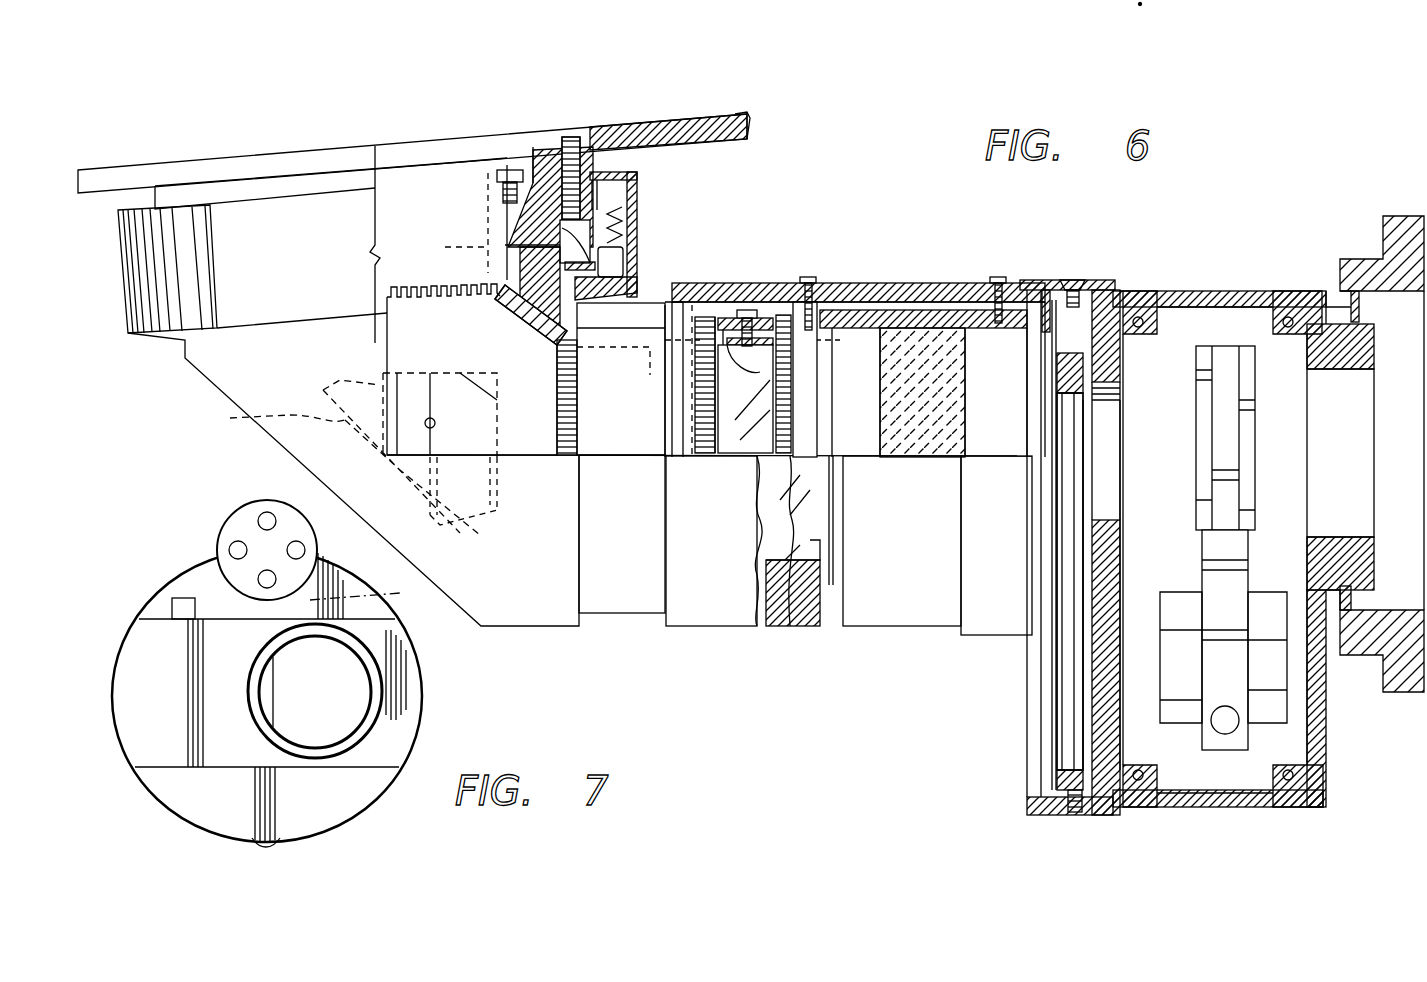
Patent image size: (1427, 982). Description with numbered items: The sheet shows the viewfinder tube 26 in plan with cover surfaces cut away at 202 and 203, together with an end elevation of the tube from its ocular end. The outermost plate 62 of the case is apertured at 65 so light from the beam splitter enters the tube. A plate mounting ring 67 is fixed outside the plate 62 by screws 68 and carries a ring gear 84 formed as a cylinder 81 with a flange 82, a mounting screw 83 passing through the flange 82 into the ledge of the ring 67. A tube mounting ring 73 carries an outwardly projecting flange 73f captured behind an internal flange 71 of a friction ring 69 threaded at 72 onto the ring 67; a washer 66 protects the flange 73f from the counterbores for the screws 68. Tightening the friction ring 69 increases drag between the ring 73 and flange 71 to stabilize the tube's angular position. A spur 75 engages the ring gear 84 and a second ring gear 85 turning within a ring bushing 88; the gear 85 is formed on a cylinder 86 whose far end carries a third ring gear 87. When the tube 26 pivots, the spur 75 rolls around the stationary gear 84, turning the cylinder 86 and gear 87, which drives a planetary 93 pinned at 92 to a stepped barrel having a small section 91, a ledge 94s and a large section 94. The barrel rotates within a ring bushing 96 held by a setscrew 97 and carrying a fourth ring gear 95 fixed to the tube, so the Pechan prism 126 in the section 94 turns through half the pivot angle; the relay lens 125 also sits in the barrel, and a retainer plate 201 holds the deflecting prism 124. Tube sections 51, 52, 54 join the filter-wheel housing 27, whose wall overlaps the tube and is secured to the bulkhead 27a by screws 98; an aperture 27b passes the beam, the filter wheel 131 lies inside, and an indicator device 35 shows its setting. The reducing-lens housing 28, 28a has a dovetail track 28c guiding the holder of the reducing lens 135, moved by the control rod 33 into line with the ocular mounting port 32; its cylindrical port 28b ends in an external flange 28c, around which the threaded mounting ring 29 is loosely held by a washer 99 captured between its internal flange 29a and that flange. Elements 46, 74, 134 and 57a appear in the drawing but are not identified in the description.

In FIG. 6, the viewfinder tube 26 is at (900, 283).
In FIG. 6, the filter-wheel housing 27 is at (1040, 815).
In FIG. 7, the filter-wheel housing 27 is at (198, 567).
In FIG. 6, the bulkhead 27a is at (1125, 300).
In FIG. 6, the aperture 27b is at (1107, 547).
In FIG. 6, the reducing-lens housing 28 is at (1233, 552).
In FIG. 7, the reducing-lens housing 28 is at (147, 737).
In FIG. 6, the reducing-lens housing body 28a is at (1297, 807).
In FIG. 6, the cylindrical port 28b is at (1310, 547).
In FIG. 6, the external flange 28c is at (1212, 387).
In FIG. 6, the mounting ring 29 is at (1402, 692).
In FIG. 7, the mounting ring 29 is at (375, 705).
In FIG. 6, the internal flange 29a is at (1337, 612).
In FIG. 7, the ocular mounting port 32 is at (383, 670).
In FIG. 6, the control rod 33 is at (1225, 737).
In FIG. 7, the control rod 33 is at (180, 598).
In FIG. 7, the indicator device 35 is at (257, 507).
In FIG. 6, the body 46 is at (118, 300).
In FIG. 6, the tube section 51 is at (535, 610).
In FIG. 6, the tube section 52 is at (715, 626).
In FIG. 6, the tube section 54 is at (997, 637).
In FIG. 6, the screw 57a is at (1142, 318).
In FIG. 6, the outermost plate 62 is at (78, 193).
In FIG. 6, the aperture 65 is at (560, 150).
In FIG. 6, the washer 66 is at (560, 228).
In FIG. 6, the plate mounting ring 67 is at (545, 160).
In FIG. 6, the screws 68 is at (605, 150).
In FIG. 6, the friction ring 69 is at (637, 180).
In FIG. 6, the internal flange 71 is at (623, 272).
In FIG. 6, the threads 72 is at (622, 222).
In FIG. 6, the tube mounting ring 73 is at (558, 345).
In FIG. 6, the peripheral flange 73f is at (600, 250).
In FIG. 6, the pivot block 74 is at (532, 318).
In FIG. 6, the spur 75 is at (520, 305).
In FIG. 6, the cylinder 81 is at (372, 172).
In FIG. 6, the flange 82 is at (510, 168).
In FIG. 6, the mounting screw 83 is at (505, 165).
In FIG. 6, the ring gear 84 is at (453, 310).
In FIG. 6, the second ring gear 85 is at (557, 455).
In FIG. 6, the cylinder 86 is at (612, 457).
In FIG. 6, the third ring gear 87 is at (712, 456).
In FIG. 6, the ring bushing 88 is at (697, 300).
In FIG. 6, the small-diameter barrel section 91 is at (790, 367).
In FIG. 6, the pin 92 is at (738, 318).
In FIG. 6, the planetary gear 93 is at (805, 302).
In FIG. 6, the large-diameter barrel section 94 is at (930, 312).
In FIG. 6, the annular step 94s is at (862, 328).
In FIG. 6, the fourth ring gear 95 is at (758, 500).
In FIG. 6, the ring bushing 96 is at (840, 462).
In FIG. 6, the setscrew 97 is at (810, 277).
In FIG. 6, the screws 98 is at (1040, 285).
In FIG. 6, the washer 99 is at (1350, 302).
In FIG. 6, the deflecting prism 124 is at (355, 385).
In FIG. 6, the relay lens 125 is at (760, 407).
In FIG. 6, the Pechan prism 126 is at (940, 392).
In FIG. 6, the filter wheel 131 is at (1070, 717).
In FIG. 6, the guide 134 is at (1092, 502).
In FIG. 6, the reducing lens 135 is at (1162, 642).
In FIG. 6, the retainer plate 201 is at (325, 457).
In FIG. 6, the cover cut-away 202 is at (392, 220).
In FIG. 6, the cover cut-away 203 is at (615, 455).